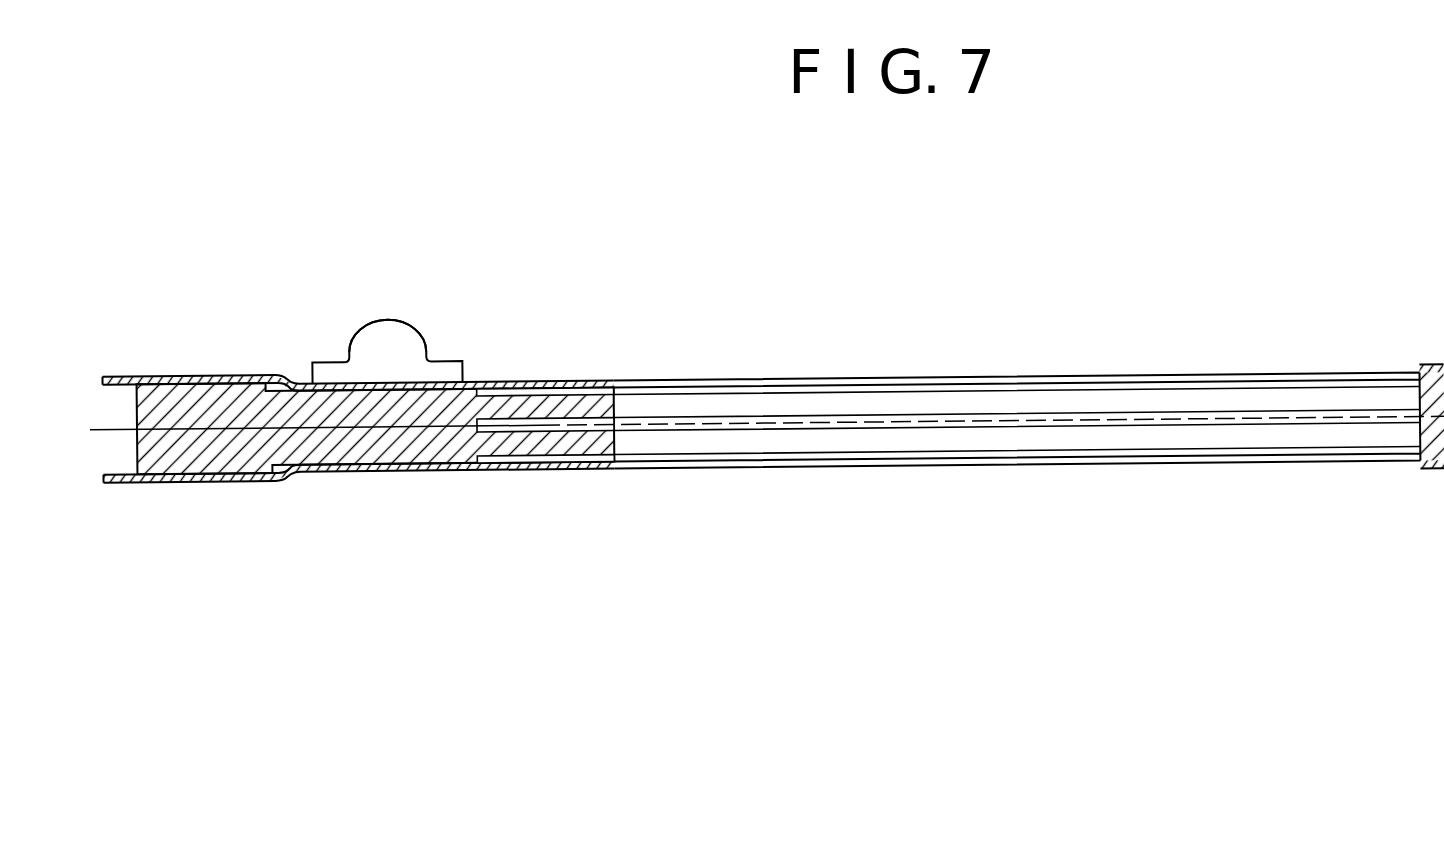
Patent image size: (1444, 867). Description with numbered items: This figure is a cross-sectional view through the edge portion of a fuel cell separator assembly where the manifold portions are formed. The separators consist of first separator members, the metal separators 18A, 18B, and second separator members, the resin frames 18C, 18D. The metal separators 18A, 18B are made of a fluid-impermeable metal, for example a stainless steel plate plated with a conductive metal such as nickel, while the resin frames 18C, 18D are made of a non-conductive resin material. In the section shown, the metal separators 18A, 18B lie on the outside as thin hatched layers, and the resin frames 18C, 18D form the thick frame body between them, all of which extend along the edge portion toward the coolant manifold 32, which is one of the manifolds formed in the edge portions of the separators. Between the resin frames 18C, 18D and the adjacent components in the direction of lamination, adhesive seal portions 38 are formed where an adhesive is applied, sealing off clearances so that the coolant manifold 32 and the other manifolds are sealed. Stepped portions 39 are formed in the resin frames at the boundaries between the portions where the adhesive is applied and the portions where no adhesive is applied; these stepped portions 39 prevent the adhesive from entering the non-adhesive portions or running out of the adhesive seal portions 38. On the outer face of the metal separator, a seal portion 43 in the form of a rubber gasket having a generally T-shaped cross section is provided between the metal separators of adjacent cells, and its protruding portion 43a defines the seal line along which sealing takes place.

The metal separator 18A is at (120, 481).
The metal separator 18B is at (120, 374).
The resin frame 18C is at (205, 457).
The resin frame 18D is at (242, 408).
The coolant manifold 32 is at (783, 440).
The adhesive seal portion 38 is at (577, 395).
The stepped portion 39 is at (522, 392).
The seal portion 43 is at (452, 368).
The protruding portion 43a is at (380, 340).